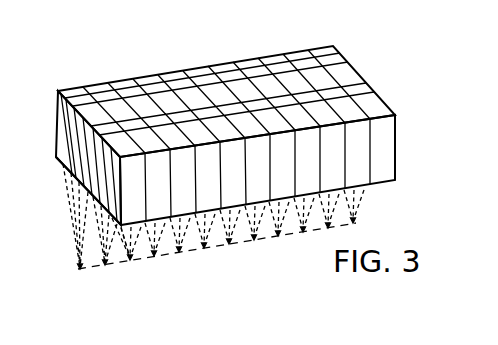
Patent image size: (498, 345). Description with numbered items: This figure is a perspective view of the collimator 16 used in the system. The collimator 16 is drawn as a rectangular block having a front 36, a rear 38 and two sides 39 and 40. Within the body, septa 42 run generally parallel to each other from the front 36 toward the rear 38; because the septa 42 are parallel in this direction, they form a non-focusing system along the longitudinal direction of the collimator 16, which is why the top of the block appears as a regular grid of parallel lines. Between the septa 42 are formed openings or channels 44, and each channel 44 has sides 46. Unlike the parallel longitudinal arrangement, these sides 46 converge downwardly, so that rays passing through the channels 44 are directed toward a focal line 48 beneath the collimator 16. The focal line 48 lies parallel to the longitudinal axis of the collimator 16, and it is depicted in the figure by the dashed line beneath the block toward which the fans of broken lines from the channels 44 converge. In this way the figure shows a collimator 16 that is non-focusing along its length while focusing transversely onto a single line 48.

The collimator 16 is at (242, 125).
The front 36 is at (57, 143).
The rear 38 is at (364, 78).
The side 39 is at (388, 165).
The side 40 is at (142, 76).
The septa 42 is at (93, 97).
The channels 44 is at (72, 153).
The sides 46 is at (58, 117).
The focal line 48 is at (222, 246).